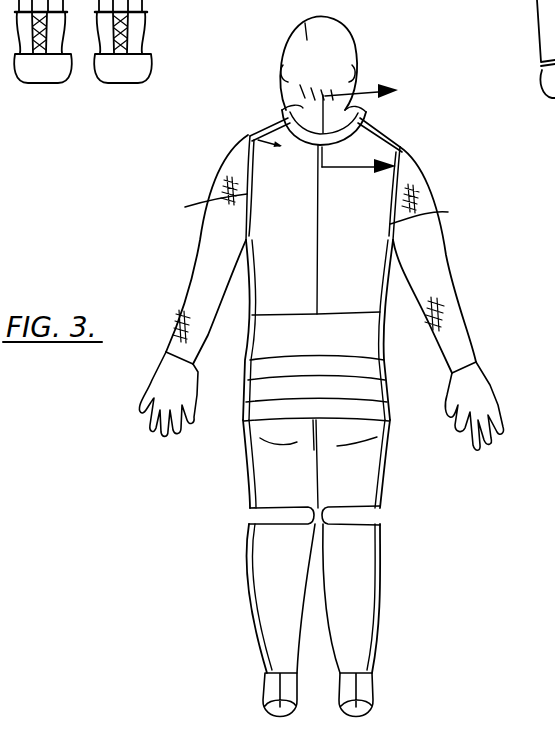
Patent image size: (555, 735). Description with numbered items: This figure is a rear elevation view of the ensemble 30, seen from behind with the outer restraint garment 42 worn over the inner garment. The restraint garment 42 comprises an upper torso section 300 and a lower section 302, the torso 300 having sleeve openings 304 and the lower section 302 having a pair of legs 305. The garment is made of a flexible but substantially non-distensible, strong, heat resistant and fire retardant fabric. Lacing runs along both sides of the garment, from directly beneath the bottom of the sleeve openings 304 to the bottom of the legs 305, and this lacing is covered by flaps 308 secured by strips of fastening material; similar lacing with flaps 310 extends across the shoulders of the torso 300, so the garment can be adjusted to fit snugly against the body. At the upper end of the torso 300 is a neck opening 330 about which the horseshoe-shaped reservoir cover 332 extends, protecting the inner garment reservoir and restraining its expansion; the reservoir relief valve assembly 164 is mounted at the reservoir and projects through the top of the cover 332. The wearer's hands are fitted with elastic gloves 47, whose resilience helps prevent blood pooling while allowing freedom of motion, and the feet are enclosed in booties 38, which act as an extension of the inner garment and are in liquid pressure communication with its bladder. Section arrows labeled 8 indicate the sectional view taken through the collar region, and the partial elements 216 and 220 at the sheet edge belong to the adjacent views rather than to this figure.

The ensemble 30 is at (416, 428).
The booties 38 is at (253, 696).
The outer restraint garment 42 is at (248, 133).
The elastic gloves 47 is at (173, 372).
The reservoir relief valve assembly 164 is at (283, 110).
The leg portion of adjacent figure 216 is at (542, 67).
The foot portion of adjacent figure 220 is at (538, 95).
The upper torso section 300 is at (238, 279).
The lower section 302 is at (228, 422).
The sleeve openings 304 is at (315, 259).
The legs 305 is at (247, 560).
The flaps 308 is at (246, 345).
The flaps 310 is at (249, 134).
The neck opening 330 is at (361, 114).
The reservoir cover 332 is at (317, 140).
The section line 8- 8 is at (368, 140).